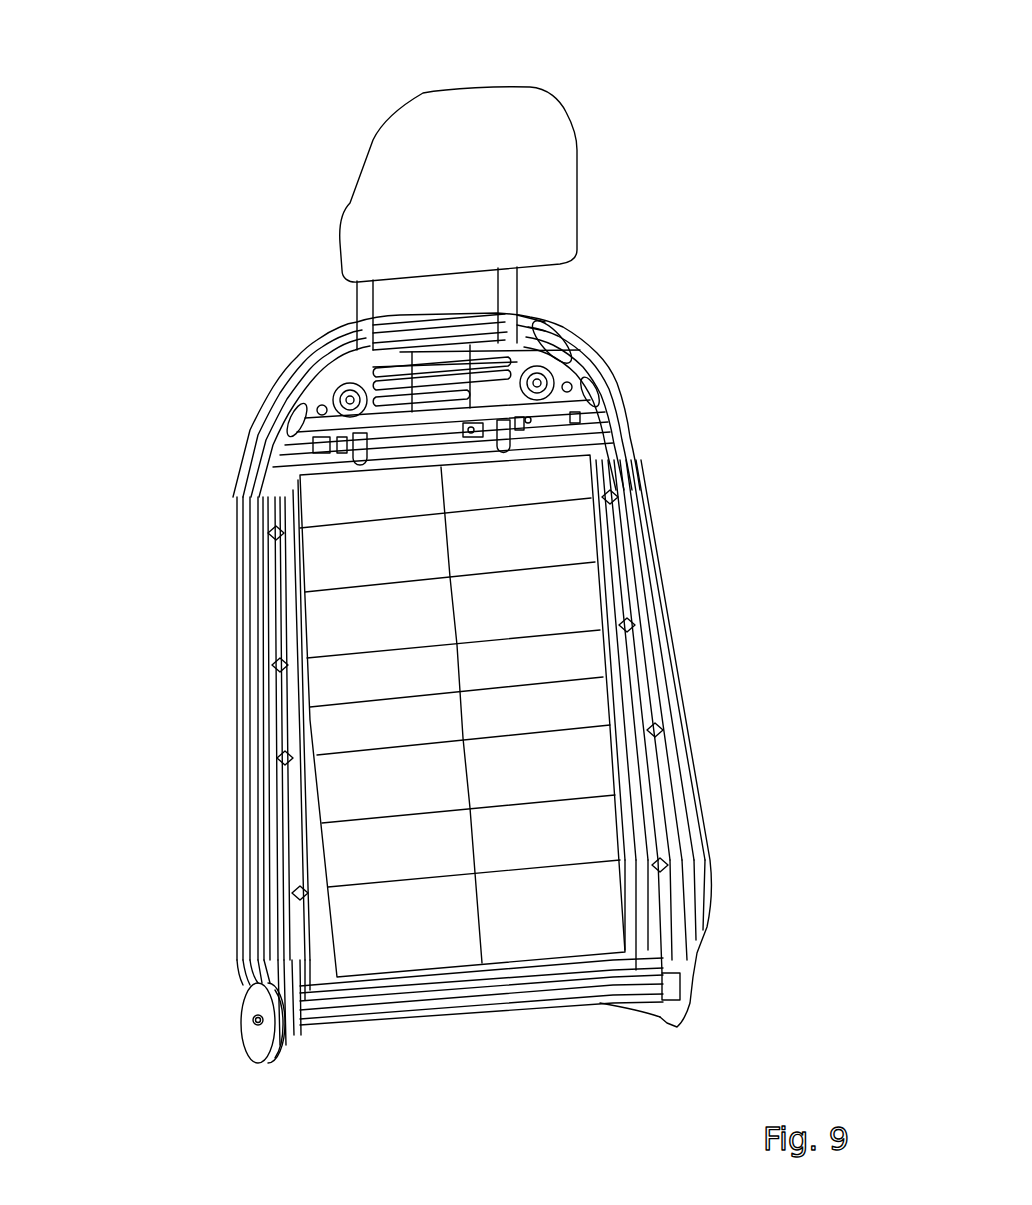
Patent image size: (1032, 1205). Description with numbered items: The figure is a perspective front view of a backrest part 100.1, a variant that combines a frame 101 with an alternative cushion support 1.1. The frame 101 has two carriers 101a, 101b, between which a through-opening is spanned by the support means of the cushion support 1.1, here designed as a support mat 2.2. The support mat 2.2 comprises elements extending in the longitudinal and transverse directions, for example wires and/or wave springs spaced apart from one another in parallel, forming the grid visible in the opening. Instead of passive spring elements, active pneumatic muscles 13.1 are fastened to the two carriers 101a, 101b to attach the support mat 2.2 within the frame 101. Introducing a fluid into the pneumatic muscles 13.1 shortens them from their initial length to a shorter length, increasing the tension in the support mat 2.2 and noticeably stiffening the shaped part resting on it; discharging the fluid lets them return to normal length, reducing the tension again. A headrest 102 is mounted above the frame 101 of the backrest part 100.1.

The backrest part 100.1 is at (735, 180).
The headrest 102 is at (570, 96).
The frame 101 is at (640, 402).
The carrier 101a is at (240, 700).
The carrier 101b is at (680, 660).
The active pneumatic muscles 13.1 is at (262, 525).
The cushion support 1.1 is at (560, 761).
The support mat 2.2 is at (540, 627).